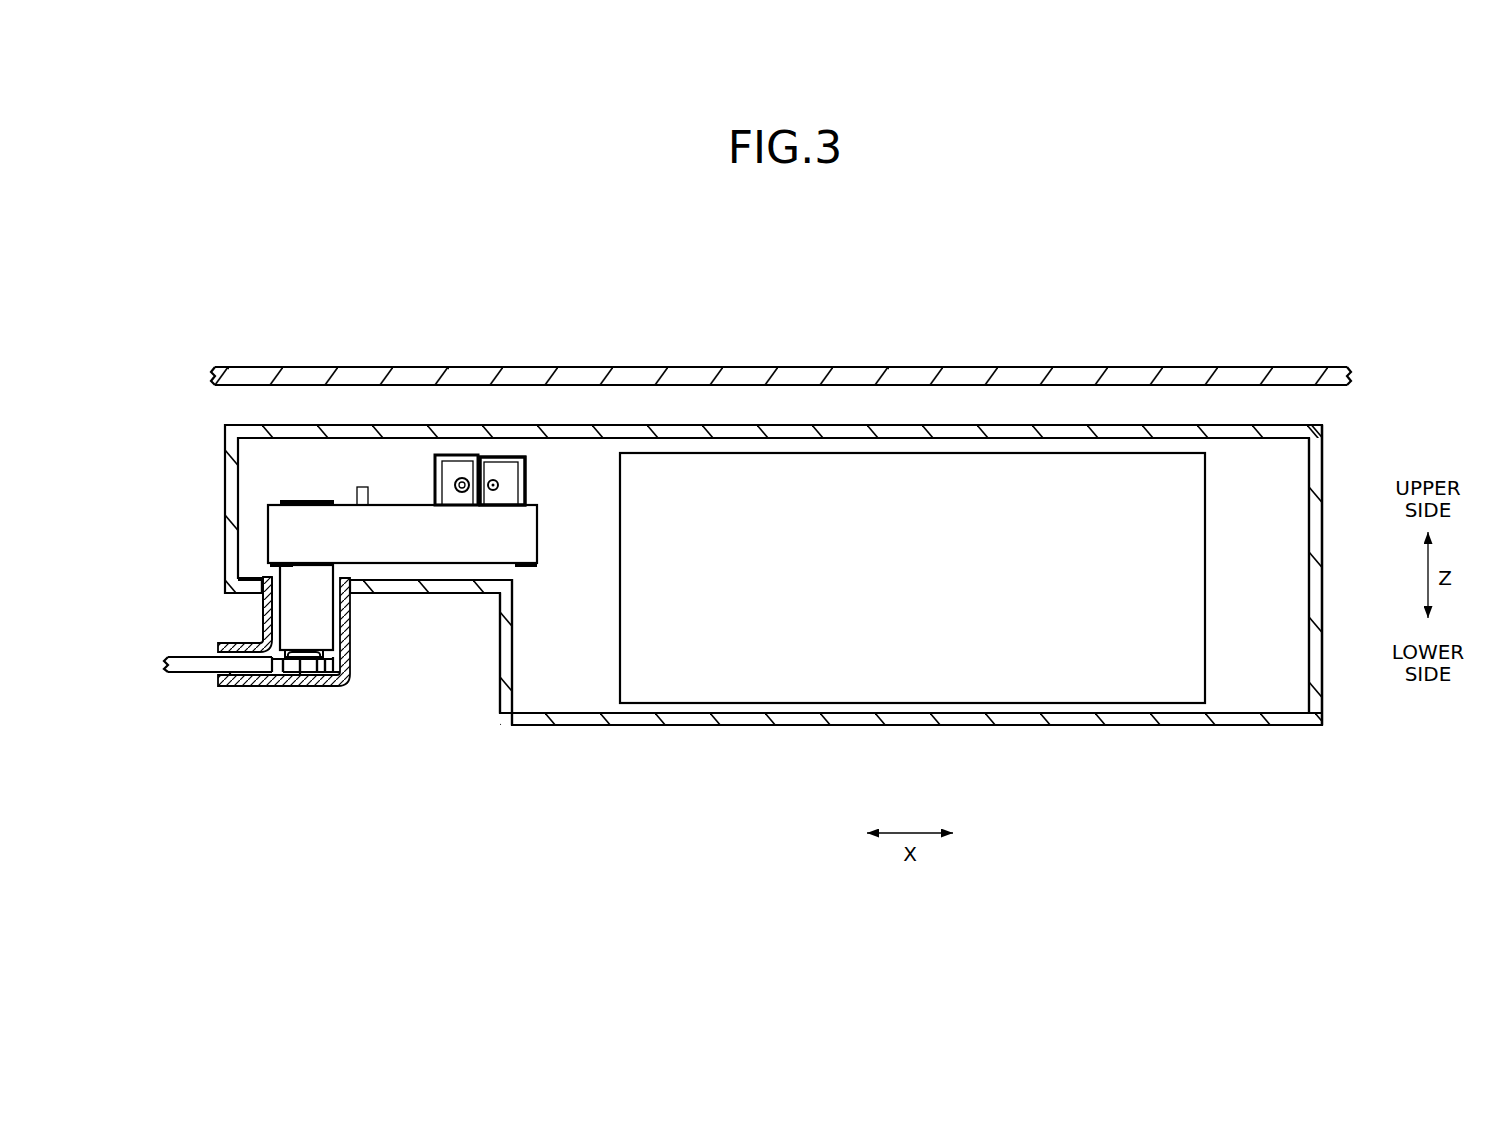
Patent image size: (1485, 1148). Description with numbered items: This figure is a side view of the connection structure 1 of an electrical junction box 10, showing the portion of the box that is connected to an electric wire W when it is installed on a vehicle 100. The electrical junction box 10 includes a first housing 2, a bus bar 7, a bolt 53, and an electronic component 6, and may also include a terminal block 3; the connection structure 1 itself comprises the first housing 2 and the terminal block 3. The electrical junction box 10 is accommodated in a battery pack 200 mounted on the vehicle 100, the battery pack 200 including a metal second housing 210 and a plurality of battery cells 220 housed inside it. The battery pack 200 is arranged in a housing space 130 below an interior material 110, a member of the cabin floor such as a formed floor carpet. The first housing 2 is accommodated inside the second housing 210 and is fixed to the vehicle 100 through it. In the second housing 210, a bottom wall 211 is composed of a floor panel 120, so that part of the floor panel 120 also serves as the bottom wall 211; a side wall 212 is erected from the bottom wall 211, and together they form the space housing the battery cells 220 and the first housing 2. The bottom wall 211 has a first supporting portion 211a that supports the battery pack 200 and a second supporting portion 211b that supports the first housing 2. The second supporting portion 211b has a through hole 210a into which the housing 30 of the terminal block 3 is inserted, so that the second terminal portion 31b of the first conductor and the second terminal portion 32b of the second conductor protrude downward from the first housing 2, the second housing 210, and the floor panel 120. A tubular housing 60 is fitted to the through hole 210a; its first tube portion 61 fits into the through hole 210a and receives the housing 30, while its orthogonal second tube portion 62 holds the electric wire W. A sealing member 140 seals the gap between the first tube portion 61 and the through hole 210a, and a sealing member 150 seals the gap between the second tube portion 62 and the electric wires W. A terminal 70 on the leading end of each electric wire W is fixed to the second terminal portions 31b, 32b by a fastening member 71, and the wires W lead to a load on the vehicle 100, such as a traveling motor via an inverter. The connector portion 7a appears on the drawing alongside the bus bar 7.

The vehicle 100 is at (302, 227).
The connection structure 1 is at (393, 297).
The first housing 2 is at (392, 498).
The terminal block 3 is at (298, 498).
The electrical junction box 10 is at (417, 498).
The electronic component 6 is at (456, 470).
The connector portion 7a is at (492, 470).
The bus bar 7 is at (502, 481).
The interior material 110 is at (870, 377).
The second housing 210 is at (1018, 432).
The battery pack 200 is at (1070, 410).
The battery cells 220 is at (1160, 453).
The housing space 130 is at (1246, 410).
The side wall 212 is at (1312, 568).
The through hole 210a is at (262, 583).
The housing 30 is at (290, 570).
The second terminal portion 31b is at (300, 663).
The second terminal portion 32b is at (305, 718).
The tubular housing 60 is at (250, 623).
The first tube portion 61 is at (262, 606).
The second tube portion 62 is at (228, 636).
The electric wire W is at (183, 667).
The sealing member 150 is at (237, 686).
The terminal 70 is at (283, 665).
The fastening member 71 is at (318, 670).
The bolt 53 is at (362, 505).
The sealing member 140 is at (352, 590).
The bottom wall 211 is at (415, 808).
The floor panel 120 is at (911, 719).
The first supporting portion 211a is at (623, 724).
The second supporting portion 211b is at (453, 582).